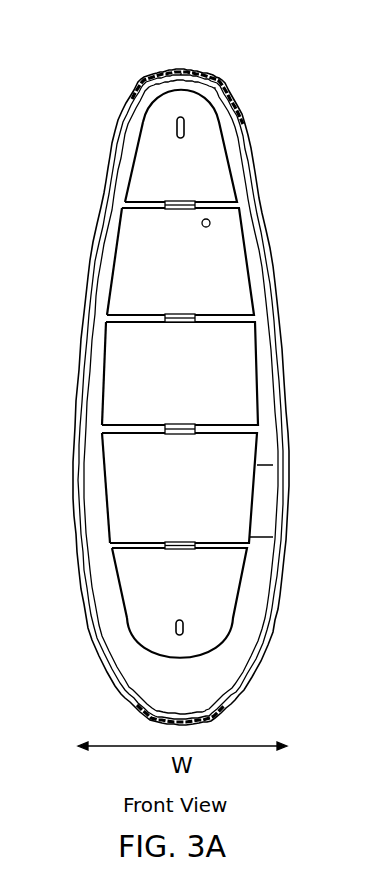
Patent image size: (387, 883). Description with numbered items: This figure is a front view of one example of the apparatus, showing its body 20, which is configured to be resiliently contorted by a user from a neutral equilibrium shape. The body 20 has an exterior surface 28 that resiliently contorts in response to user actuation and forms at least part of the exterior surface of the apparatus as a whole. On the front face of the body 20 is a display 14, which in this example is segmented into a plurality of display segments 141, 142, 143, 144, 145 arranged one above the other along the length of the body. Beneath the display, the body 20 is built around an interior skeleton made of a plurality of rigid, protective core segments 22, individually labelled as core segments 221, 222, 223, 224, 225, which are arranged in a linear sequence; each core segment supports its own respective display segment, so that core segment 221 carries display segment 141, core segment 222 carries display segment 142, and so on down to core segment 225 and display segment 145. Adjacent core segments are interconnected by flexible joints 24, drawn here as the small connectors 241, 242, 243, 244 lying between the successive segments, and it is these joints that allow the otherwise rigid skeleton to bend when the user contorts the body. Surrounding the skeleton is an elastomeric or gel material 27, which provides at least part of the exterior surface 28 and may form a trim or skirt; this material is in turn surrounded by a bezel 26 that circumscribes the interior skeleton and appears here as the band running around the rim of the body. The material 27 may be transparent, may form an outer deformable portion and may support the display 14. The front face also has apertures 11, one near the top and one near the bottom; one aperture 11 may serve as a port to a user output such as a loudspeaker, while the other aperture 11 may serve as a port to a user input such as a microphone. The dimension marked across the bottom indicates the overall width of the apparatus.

The body 20 is at (232, 60).
The aperture 11 is at (188, 125).
The display 14 is at (81, 382).
The first display segment 141 is at (150, 142).
The second display segment 142 is at (132, 242).
The third display segment 143 is at (122, 353).
The fourth display segment 144 is at (122, 468).
The fifth display segment 145 is at (132, 580).
The core segments 22 is at (230, 374).
The first core segment 221 is at (218, 173).
The second core segment 222 is at (232, 268).
The third core segment 223 is at (240, 382).
The fourth core segment 224 is at (237, 492).
The fifth core segment 225 is at (228, 570).
The flexible joints 24 is at (166, 349).
The first flexible joint 241 is at (185, 202).
The second flexible joint 242 is at (178, 312).
The third flexible joint 243 is at (178, 425).
The fourth flexible joint 244 is at (180, 540).
The bezel 26 is at (172, 72).
The elastomeric or gel material 27 is at (245, 652).
The exterior surface 28 is at (123, 663).